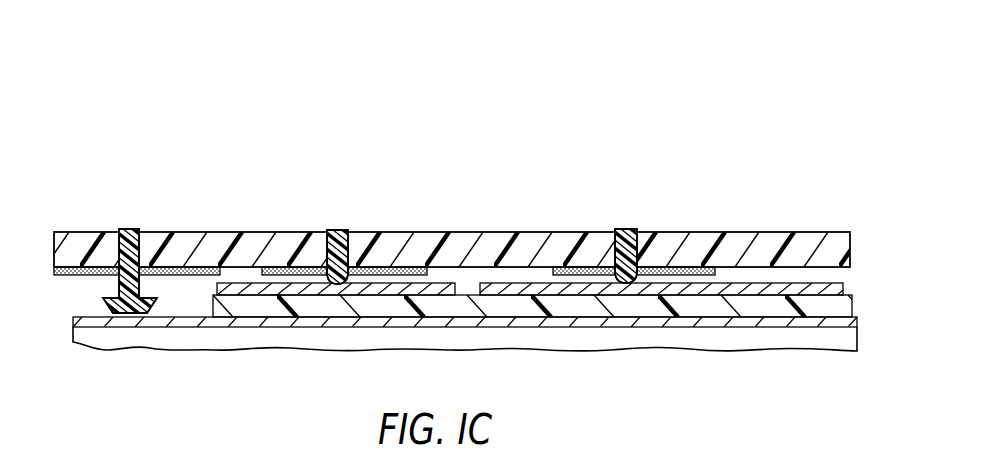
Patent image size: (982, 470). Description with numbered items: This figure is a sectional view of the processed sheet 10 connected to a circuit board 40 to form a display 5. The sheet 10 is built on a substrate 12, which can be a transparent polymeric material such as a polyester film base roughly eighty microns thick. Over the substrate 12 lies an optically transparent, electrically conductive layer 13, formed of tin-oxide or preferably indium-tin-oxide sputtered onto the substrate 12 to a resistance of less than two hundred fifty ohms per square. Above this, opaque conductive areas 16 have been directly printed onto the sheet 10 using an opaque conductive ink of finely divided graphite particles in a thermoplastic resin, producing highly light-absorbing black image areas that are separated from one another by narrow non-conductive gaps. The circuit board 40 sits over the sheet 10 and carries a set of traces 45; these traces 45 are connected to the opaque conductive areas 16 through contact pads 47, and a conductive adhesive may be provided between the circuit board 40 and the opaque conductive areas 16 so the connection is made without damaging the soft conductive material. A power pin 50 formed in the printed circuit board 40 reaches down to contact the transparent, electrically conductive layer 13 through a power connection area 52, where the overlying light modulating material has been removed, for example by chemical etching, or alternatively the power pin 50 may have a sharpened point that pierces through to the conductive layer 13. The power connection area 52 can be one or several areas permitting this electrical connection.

The display 5 is at (473, 274).
The sheet 10 is at (488, 292).
The substrate 12 is at (233, 340).
The transparent, electrically conductive layer 13 is at (147, 322).
The opaque conductive areas 16 is at (452, 286).
The circuit board 40 is at (80, 243).
The traces 45 is at (96, 274).
The contact pads 47 is at (338, 237).
The power pin 50 is at (128, 229).
The power connection area 52 is at (188, 292).